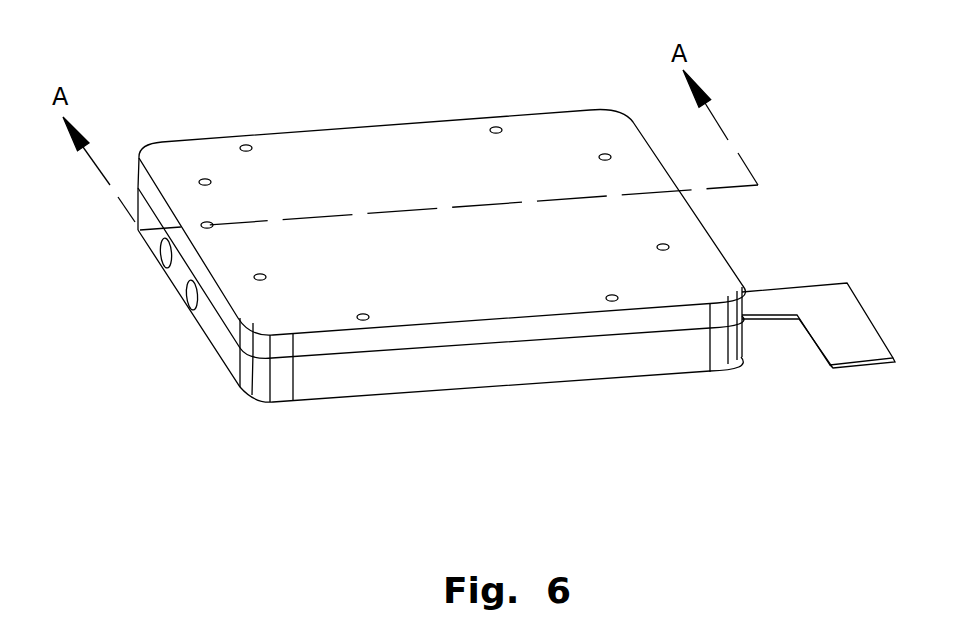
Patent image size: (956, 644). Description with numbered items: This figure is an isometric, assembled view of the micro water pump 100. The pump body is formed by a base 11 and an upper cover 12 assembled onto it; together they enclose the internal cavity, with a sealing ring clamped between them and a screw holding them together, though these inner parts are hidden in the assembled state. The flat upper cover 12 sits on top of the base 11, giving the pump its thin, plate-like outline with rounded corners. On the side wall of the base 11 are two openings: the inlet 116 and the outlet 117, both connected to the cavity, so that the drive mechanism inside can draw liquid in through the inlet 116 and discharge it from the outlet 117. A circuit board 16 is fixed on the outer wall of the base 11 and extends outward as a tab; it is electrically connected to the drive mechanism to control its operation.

The micro water pump 100 is at (452, 64).
The base 11 is at (362, 383).
The upper cover 12 is at (507, 327).
The circuit board 16 is at (783, 297).
The inlet 116 is at (153, 258).
The outlet 117 is at (187, 302).